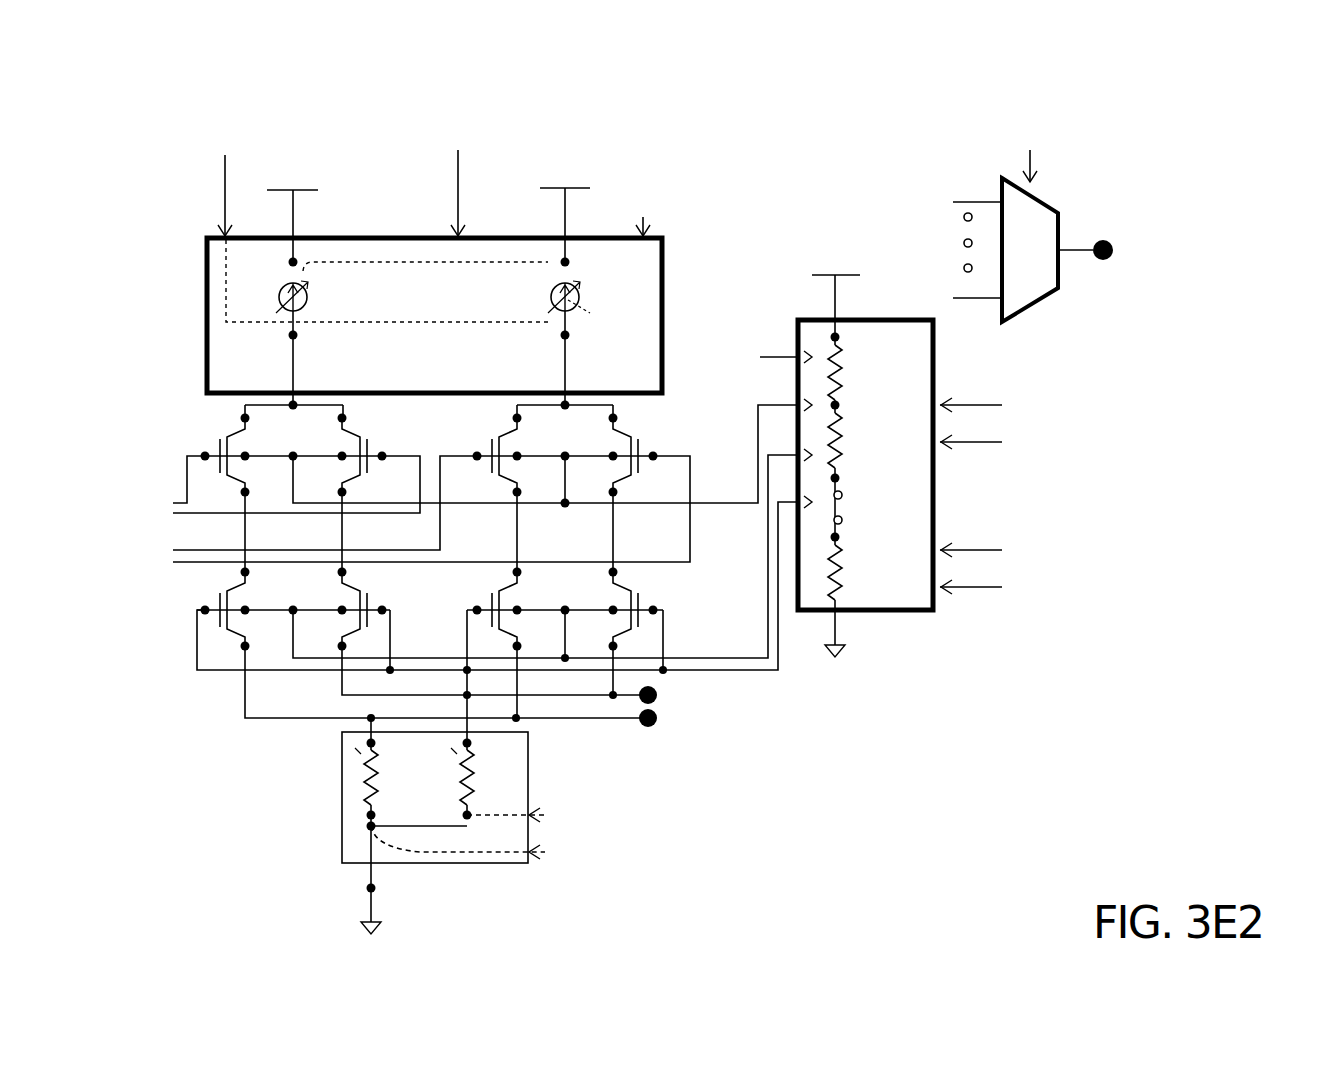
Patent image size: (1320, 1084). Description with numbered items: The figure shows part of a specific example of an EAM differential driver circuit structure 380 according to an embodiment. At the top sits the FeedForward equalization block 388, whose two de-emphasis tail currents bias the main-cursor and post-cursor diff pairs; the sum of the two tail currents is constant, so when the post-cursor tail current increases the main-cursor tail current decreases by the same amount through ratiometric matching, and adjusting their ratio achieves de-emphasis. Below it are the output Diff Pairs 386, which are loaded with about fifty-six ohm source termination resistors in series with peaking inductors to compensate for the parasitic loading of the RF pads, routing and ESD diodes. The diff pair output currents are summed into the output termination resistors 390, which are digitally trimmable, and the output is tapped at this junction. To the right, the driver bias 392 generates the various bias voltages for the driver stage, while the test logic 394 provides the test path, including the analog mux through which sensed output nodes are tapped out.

The EAM differential driver circuit structure 380 is at (245, 881).
The output Diff Pairs 386 is at (670, 594).
The FeedForward equalization block 388 is at (408, 203).
The output termination resistors 390 is at (436, 808).
The driver bias 392 is at (941, 621).
The test logic 394 is at (1049, 145).